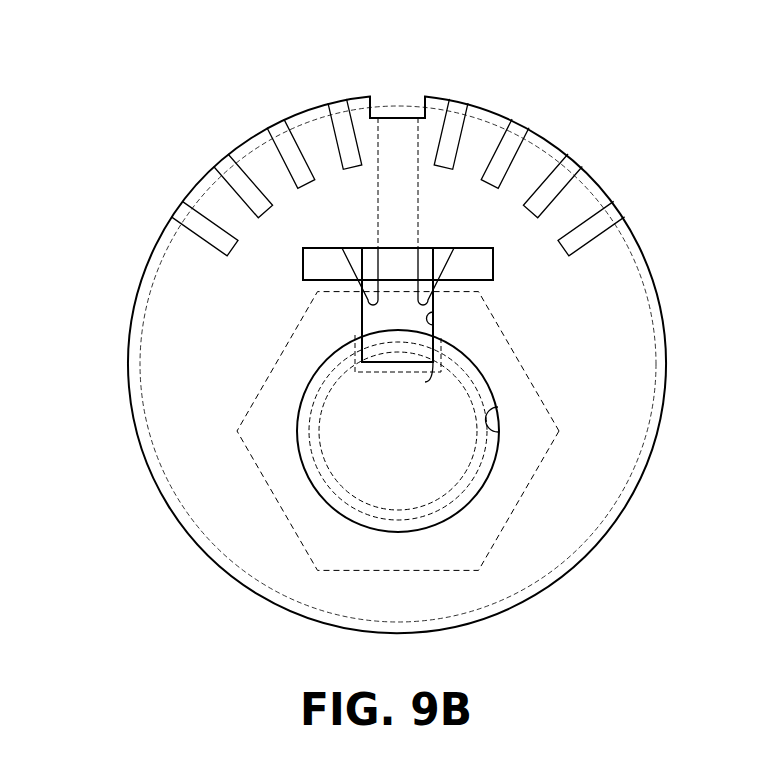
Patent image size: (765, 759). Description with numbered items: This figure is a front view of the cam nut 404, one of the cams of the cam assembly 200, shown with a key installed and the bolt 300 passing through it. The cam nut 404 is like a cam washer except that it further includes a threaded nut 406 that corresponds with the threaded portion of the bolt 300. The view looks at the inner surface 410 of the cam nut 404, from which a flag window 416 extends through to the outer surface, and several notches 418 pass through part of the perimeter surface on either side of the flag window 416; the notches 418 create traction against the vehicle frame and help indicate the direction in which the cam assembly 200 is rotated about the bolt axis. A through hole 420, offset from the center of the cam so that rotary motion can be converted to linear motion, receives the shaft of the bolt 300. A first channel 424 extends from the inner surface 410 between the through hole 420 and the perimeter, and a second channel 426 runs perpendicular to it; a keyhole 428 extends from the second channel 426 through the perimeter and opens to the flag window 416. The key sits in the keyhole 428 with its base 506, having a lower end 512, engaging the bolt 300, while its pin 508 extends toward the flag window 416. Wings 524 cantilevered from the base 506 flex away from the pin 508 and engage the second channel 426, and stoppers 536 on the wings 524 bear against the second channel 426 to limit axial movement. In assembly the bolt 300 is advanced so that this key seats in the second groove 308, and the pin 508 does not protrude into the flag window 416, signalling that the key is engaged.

The cam assembly 200 is at (134, 116).
The cam nut 404 is at (441, 161).
The inner surface 410 is at (138, 385).
The flag window 416 is at (422, 107).
The notches 418 is at (508, 144).
The threaded nut 406 is at (540, 467).
The bolt 300 is at (330, 445).
The second groove 308 is at (420, 373).
The through hole 420 is at (498, 420).
The base 506 is at (390, 328).
The pin 508 is at (397, 247).
The keyhole 428 is at (384, 240).
The wings 524 is at (360, 252).
The stoppers 536 is at (347, 272).
The second channel 426 is at (468, 258).
The first channel 424 is at (434, 318).
The lower end 512 is at (430, 372).